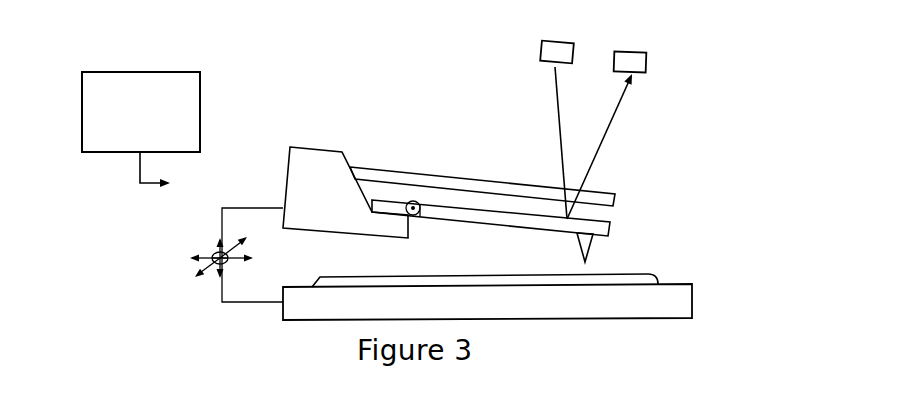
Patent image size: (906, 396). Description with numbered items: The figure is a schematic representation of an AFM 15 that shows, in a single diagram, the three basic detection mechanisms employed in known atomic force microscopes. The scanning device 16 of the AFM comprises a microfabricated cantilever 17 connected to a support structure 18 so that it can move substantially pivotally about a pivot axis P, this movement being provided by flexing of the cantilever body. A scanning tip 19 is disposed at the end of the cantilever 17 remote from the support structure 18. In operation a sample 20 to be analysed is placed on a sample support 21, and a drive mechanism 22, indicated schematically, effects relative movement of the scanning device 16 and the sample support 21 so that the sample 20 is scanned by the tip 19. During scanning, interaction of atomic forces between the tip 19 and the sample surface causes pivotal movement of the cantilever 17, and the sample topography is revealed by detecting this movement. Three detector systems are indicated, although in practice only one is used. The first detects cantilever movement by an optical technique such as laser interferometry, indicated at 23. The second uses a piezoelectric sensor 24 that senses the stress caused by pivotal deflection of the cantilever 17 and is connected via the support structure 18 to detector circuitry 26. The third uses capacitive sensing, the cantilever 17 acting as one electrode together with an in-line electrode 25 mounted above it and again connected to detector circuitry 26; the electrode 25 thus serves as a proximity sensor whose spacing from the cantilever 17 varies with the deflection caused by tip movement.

The AFM 15 is at (714, 89).
The scanning device 16 is at (495, 177).
The cantilever 17 is at (610, 228).
The support structure 18 is at (322, 147).
The scanning tip 19 is at (578, 240).
The sample 20 is at (645, 273).
The sample support 21 is at (716, 288).
The drive mechanism 22 is at (207, 253).
The optical detection system 23 is at (536, 94).
The piezoelectric sensor 24 is at (395, 214).
The in-line electrode 25 is at (603, 193).
The detector circuitry 26 is at (145, 72).
The pivot axis P is at (418, 214).